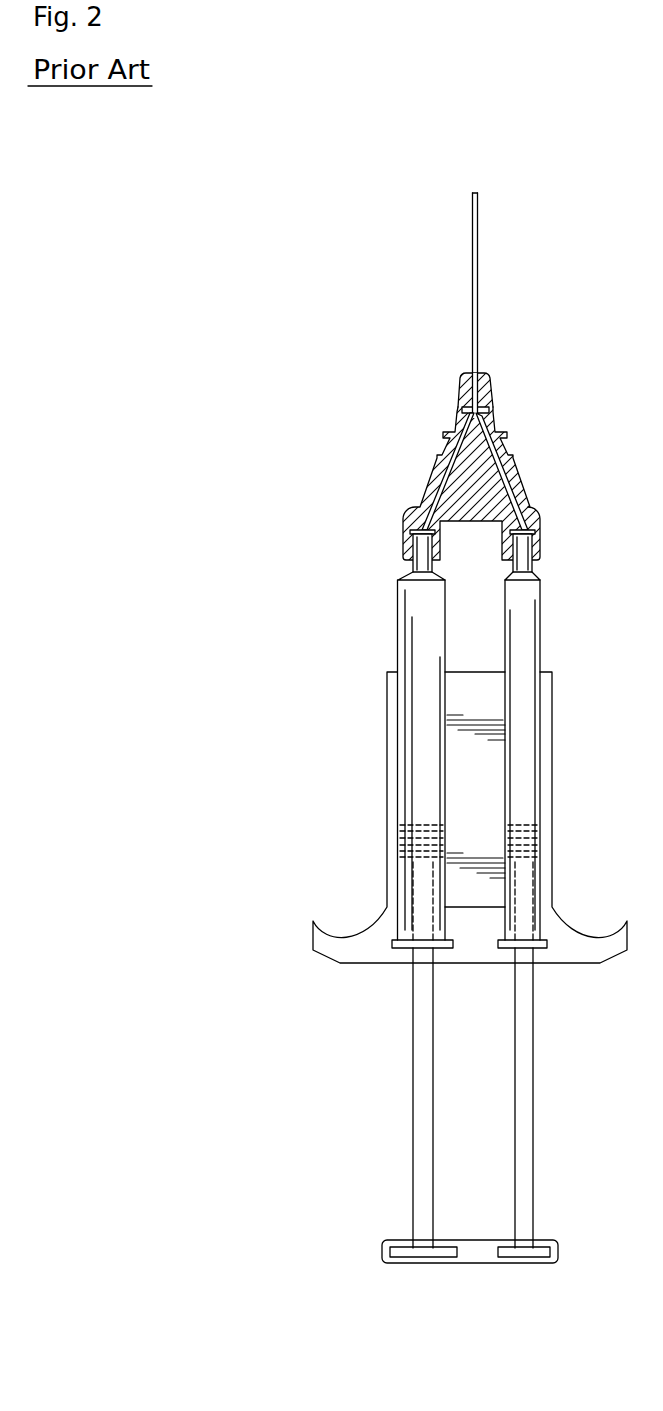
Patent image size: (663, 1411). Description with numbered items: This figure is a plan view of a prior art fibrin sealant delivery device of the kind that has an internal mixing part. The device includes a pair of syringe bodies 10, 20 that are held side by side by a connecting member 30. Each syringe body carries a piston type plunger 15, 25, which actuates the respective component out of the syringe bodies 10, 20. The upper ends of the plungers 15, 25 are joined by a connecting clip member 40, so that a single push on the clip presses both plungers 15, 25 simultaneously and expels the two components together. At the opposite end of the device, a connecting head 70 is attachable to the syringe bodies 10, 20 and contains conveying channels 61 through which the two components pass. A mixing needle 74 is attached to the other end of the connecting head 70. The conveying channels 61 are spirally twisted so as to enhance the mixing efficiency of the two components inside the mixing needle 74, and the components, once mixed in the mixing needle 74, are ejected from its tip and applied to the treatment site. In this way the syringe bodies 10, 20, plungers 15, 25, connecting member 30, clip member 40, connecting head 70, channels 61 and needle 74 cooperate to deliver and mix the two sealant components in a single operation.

The syringe body 10 is at (548, 624).
The piston type plunger 15 is at (523, 1130).
The syringe body 20 is at (394, 625).
The piston type plunger 25 is at (420, 1117).
The connecting member 30 is at (345, 947).
The connecting clip member 40 is at (478, 1258).
The conveying channels 61 is at (502, 450).
The connecting head 70 is at (478, 496).
The mixing needle 74 is at (462, 388).